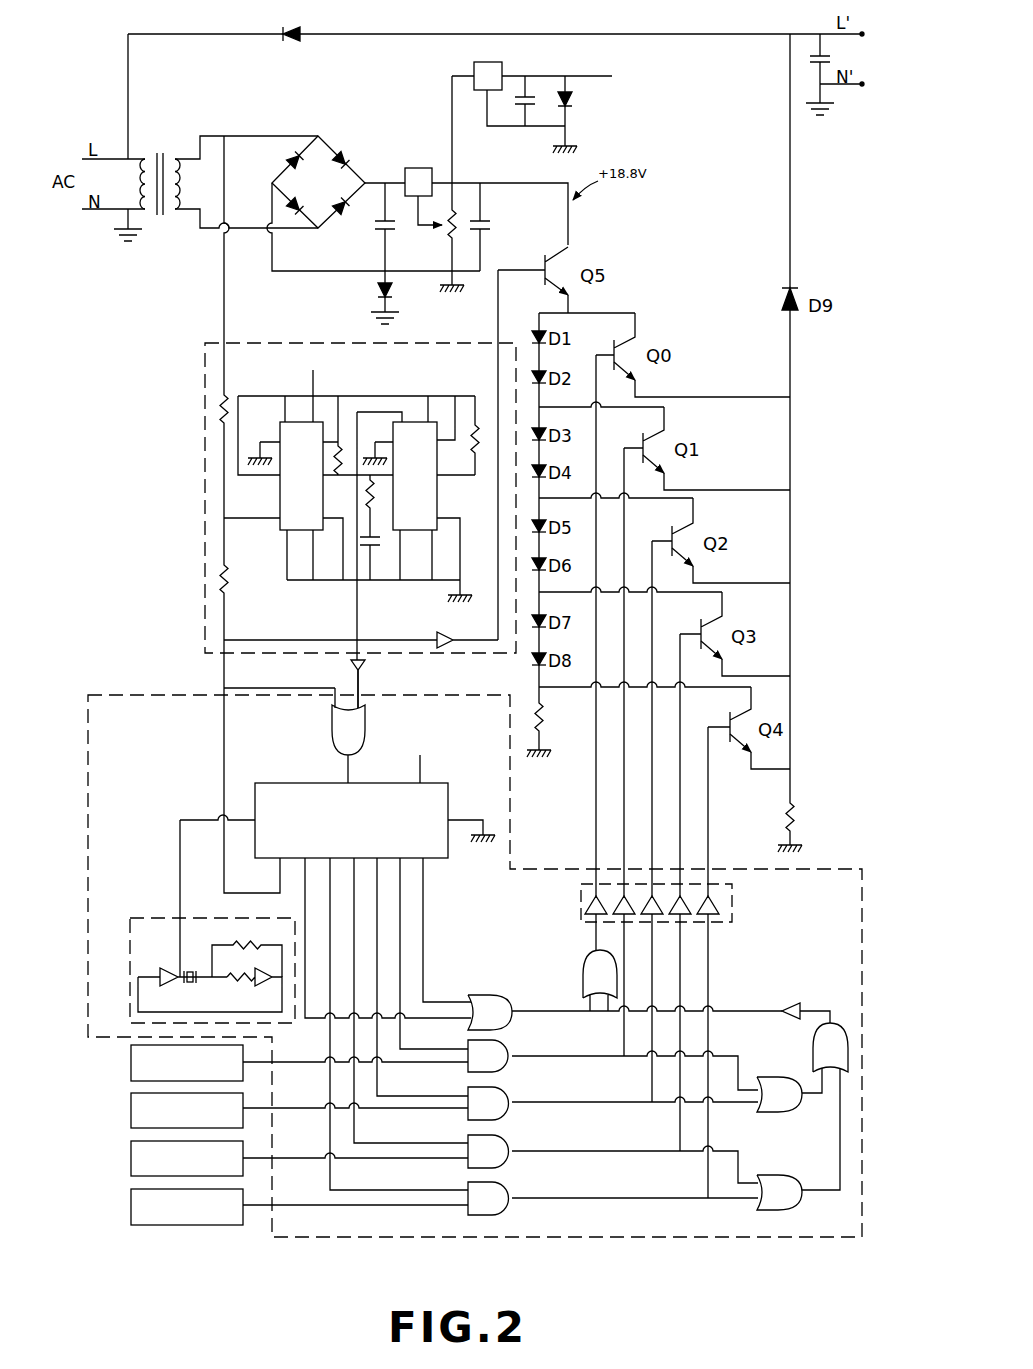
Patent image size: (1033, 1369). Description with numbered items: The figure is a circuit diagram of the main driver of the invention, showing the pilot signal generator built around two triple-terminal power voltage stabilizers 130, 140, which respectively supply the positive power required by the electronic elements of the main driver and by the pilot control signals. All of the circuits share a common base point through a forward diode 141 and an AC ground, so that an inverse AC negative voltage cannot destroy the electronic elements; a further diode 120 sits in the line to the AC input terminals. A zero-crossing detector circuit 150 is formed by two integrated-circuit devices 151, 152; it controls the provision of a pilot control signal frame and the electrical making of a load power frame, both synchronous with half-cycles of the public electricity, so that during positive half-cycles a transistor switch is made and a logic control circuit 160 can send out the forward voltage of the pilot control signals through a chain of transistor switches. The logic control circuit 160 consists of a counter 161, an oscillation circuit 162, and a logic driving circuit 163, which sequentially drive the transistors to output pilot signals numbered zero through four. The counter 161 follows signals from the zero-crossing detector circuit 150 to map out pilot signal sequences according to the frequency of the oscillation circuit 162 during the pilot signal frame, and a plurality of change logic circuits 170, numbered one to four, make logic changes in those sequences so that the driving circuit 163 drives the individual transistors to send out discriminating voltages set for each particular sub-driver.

The diode 120 is at (304, 23).
The triple-terminal power voltage stabilizer 130 is at (492, 60).
The triple-terminal power voltage stabilizer 140 is at (412, 166).
The forward diode 141 is at (377, 291).
The zero-crossing detector circuit 150 is at (203, 450).
The IC-322 151 is at (282, 533).
The IC-322 152 is at (440, 487).
The logic control circuit 160 is at (840, 866).
The IC-4017 counter 161 is at (302, 781).
The oscillation circuit 162 is at (162, 915).
The logic driving circuit 163 is at (734, 926).
The change logic circuits 170 is at (299, 1135).